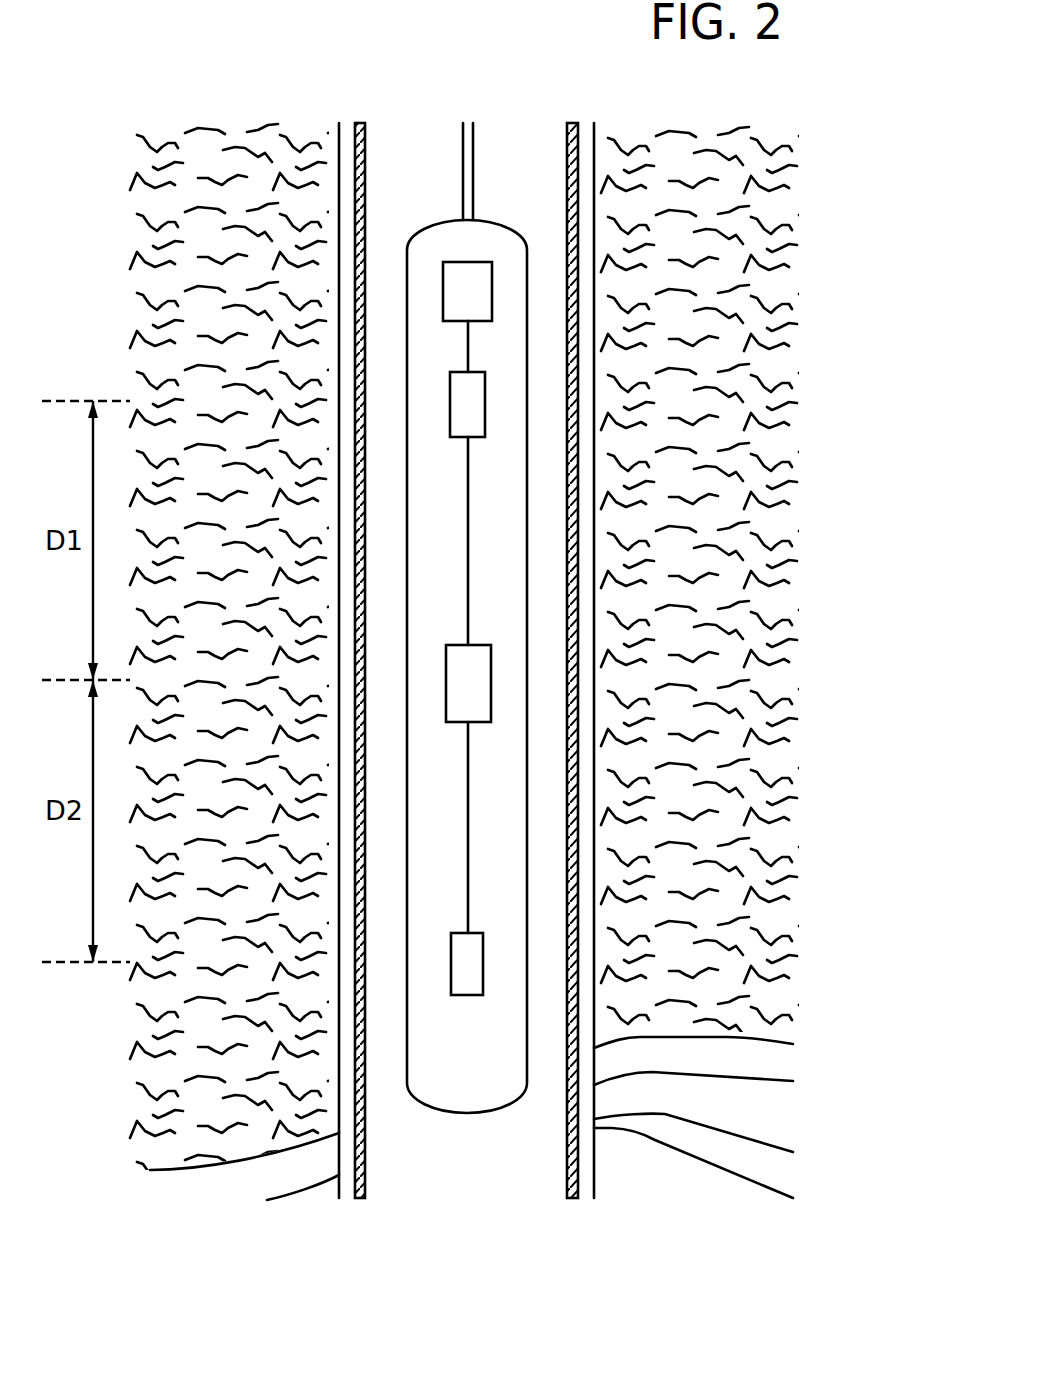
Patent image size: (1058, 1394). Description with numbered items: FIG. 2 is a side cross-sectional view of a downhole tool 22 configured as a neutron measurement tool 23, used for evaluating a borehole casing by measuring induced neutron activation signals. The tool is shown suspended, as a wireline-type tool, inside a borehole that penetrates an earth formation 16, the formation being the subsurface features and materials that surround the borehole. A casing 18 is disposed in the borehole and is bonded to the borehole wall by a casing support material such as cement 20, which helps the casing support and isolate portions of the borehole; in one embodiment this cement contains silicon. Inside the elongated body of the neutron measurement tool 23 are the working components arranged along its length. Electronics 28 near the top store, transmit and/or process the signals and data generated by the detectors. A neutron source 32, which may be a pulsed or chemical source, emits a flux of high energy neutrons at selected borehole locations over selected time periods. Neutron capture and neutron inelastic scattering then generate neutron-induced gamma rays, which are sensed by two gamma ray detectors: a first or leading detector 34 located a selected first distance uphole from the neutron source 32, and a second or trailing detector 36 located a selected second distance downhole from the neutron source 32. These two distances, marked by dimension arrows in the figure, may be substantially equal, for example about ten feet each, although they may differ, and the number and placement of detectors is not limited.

The earth formation 16 is at (273, 1143).
The casing 18 is at (575, 1197).
The cement 20 is at (583, 1193).
The downhole tool 22 is at (452, 1096).
The neutron measurement tool 23 is at (413, 144).
The electronics 28 is at (473, 278).
The neutron source 32 is at (463, 710).
The leading detector 34 is at (463, 420).
The trailing detector 36 is at (463, 977).